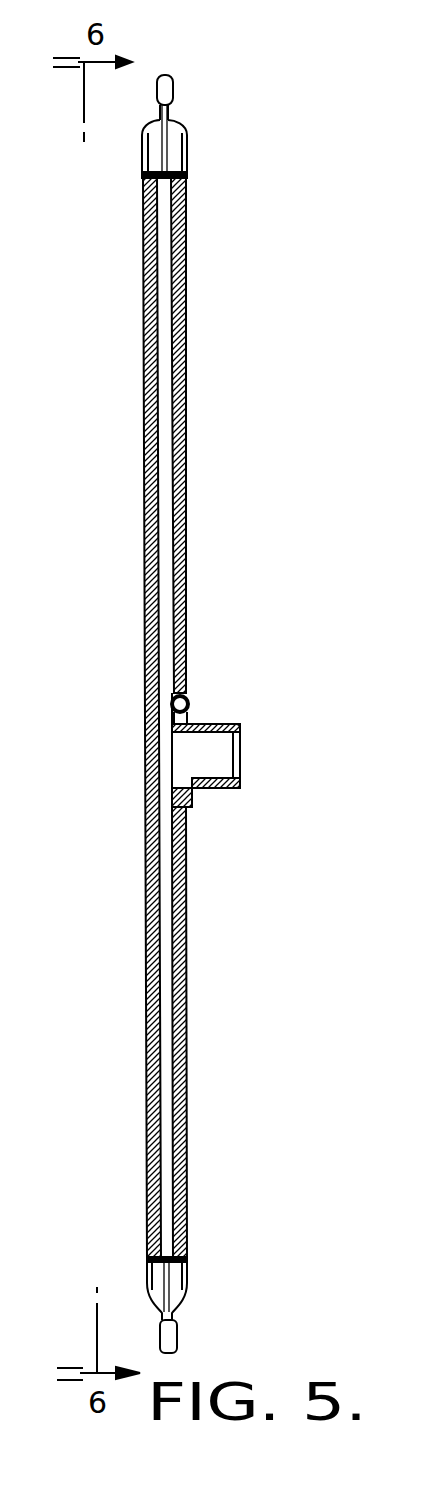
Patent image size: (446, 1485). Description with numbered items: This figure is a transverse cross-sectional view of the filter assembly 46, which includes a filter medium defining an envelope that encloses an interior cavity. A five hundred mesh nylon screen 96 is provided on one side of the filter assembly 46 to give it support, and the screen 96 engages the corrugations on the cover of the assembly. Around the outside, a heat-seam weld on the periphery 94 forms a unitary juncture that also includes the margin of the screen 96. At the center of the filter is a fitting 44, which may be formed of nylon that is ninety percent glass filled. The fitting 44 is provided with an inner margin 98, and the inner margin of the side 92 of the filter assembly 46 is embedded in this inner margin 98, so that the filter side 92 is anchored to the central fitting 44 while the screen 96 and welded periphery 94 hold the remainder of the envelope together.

The filter assembly 46 is at (138, 382).
The side of the filter assembly 92 is at (185, 593).
The 500 mesh nylon screen 96 is at (148, 1142).
The fitting 44 is at (210, 726).
The inner margin 98 is at (177, 712).
The periphery 94 is at (177, 1343).